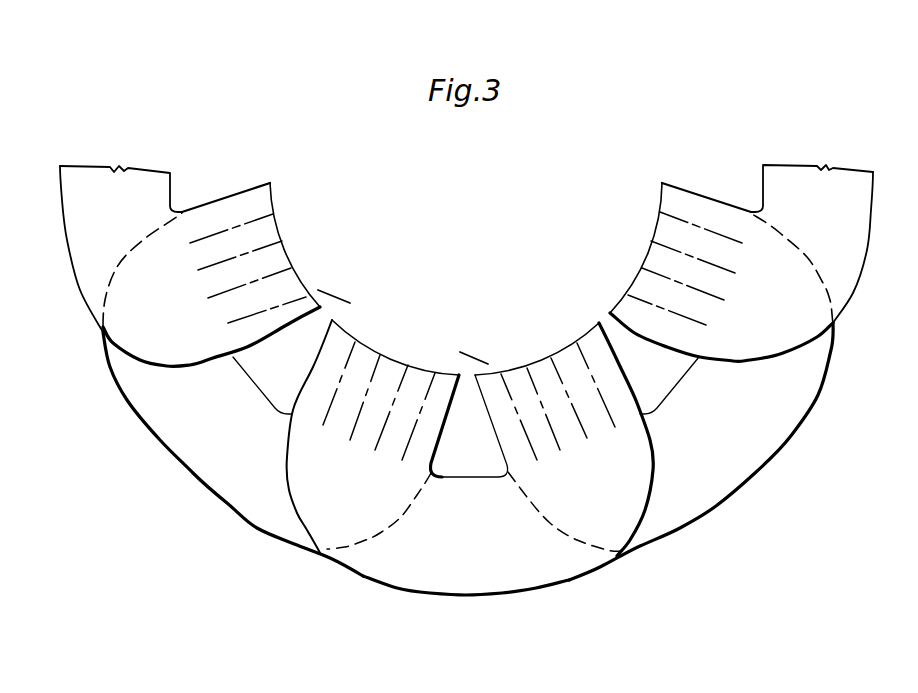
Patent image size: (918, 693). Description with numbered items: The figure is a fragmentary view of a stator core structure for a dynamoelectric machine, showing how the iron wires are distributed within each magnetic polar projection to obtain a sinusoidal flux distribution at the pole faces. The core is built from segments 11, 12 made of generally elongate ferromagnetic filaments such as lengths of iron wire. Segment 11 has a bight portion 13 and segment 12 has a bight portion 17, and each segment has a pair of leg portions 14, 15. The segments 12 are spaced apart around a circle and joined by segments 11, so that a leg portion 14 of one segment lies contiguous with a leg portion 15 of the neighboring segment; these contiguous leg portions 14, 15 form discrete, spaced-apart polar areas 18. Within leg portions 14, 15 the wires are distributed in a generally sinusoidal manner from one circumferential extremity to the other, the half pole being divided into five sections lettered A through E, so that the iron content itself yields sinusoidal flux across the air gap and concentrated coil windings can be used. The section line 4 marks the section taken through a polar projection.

The section line 4- 4 is at (334, 295).
The segment 11 is at (718, 510).
The segment 12 is at (363, 582).
The bight portion 13 is at (733, 437).
The leg portion 14 is at (343, 493).
The leg portion 15 is at (606, 480).
The bight portion 17 is at (440, 557).
The polar area 18 is at (297, 240).